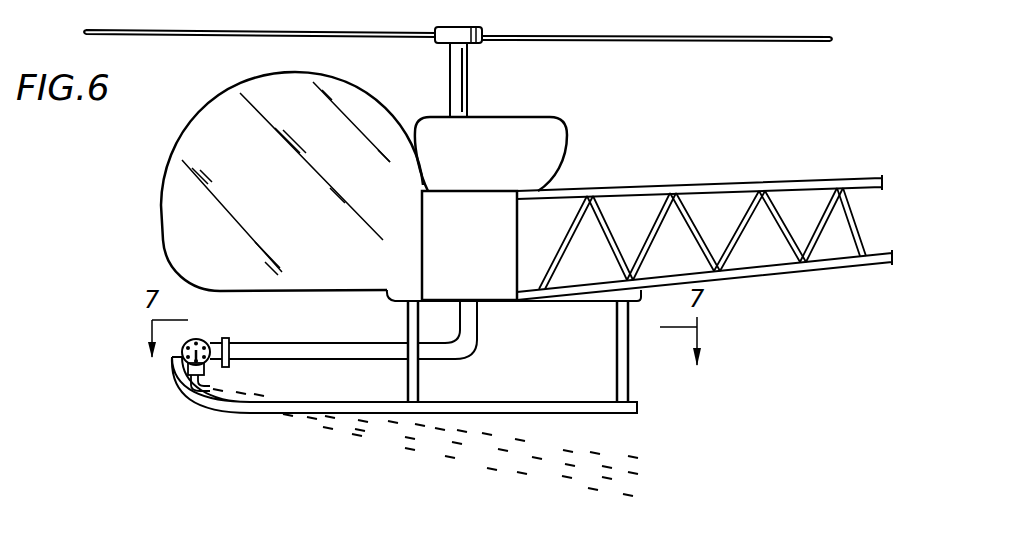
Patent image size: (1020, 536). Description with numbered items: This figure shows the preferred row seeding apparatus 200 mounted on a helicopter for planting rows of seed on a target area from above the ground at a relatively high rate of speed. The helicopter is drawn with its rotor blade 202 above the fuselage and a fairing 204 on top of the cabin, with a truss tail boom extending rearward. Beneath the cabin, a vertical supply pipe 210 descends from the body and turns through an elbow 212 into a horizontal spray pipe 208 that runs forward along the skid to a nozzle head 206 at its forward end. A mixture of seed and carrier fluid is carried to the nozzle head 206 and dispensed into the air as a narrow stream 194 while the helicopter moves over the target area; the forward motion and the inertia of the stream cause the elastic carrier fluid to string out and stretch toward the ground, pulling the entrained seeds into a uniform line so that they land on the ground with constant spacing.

The narrow stream 194 is at (435, 452).
The row seeding apparatus 200 is at (366, 381).
The rotor blade 202 is at (556, 36).
The engine fairing 204 is at (472, 197).
The nozzle head 206 is at (202, 342).
The spray pipe 208 is at (283, 347).
The vertical supply pipe 210 is at (472, 323).
The pipe elbow 212 is at (455, 353).